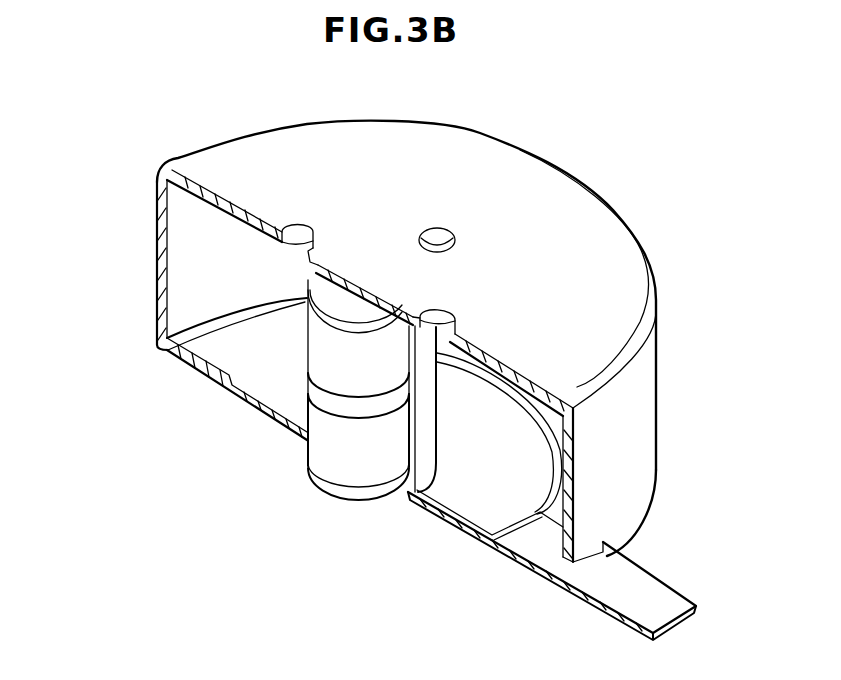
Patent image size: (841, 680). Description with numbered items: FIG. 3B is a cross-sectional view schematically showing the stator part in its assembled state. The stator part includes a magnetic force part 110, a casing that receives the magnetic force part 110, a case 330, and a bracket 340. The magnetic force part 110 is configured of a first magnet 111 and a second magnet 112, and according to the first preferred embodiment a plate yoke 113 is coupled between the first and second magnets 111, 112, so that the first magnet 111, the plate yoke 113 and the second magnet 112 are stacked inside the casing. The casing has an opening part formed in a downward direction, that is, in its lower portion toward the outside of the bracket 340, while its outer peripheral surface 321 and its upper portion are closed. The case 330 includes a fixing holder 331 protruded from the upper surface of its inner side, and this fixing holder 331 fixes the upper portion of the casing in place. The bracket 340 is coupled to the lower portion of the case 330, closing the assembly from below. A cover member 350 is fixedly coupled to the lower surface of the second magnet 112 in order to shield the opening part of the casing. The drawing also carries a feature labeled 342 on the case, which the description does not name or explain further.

The magnetic force part 110 is at (217, 373).
The first magnet 111 is at (323, 328).
The second magnet 112 is at (322, 420).
The plate yoke 113 is at (308, 383).
The outer peripheral surface 321 is at (430, 440).
The case 330 is at (638, 455).
The fixing holder 331 is at (415, 333).
The bracket 340 is at (490, 485).
The boss hole 342 is at (305, 298).
The cover member 350 is at (320, 482).